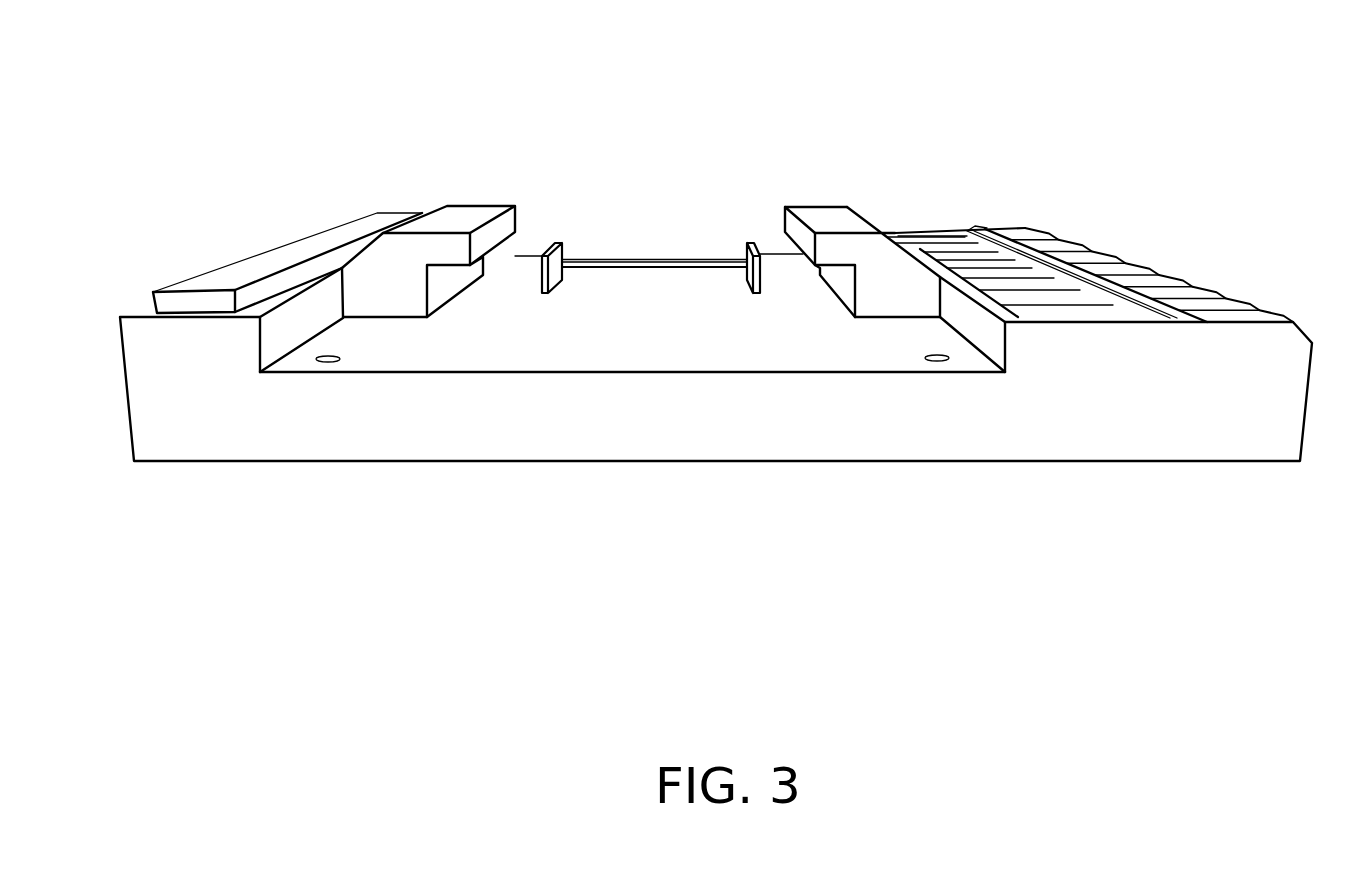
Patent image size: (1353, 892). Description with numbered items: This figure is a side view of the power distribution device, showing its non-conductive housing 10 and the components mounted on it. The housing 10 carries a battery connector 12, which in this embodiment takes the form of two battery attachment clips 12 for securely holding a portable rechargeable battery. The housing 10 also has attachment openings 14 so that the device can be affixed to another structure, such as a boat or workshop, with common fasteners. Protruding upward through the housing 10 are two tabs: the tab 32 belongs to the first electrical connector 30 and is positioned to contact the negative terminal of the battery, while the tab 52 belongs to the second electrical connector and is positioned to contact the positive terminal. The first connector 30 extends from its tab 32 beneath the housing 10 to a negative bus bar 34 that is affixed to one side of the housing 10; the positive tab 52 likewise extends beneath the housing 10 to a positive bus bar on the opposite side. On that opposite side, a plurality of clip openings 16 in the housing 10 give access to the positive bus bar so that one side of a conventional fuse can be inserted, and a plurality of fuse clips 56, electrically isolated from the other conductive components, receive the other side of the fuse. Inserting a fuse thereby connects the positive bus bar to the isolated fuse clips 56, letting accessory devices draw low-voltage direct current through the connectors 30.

The housing 10 is at (383, 413).
The battery connector 12 is at (478, 220).
The attachment opening 14 is at (930, 360).
The clip opening 16 is at (980, 272).
The first electrical connector 30 is at (281, 227).
The negative bus bar 34 is at (273, 262).
The tab 32 is at (548, 247).
The tab 52 is at (758, 247).
The fuse clip 56 is at (1173, 295).